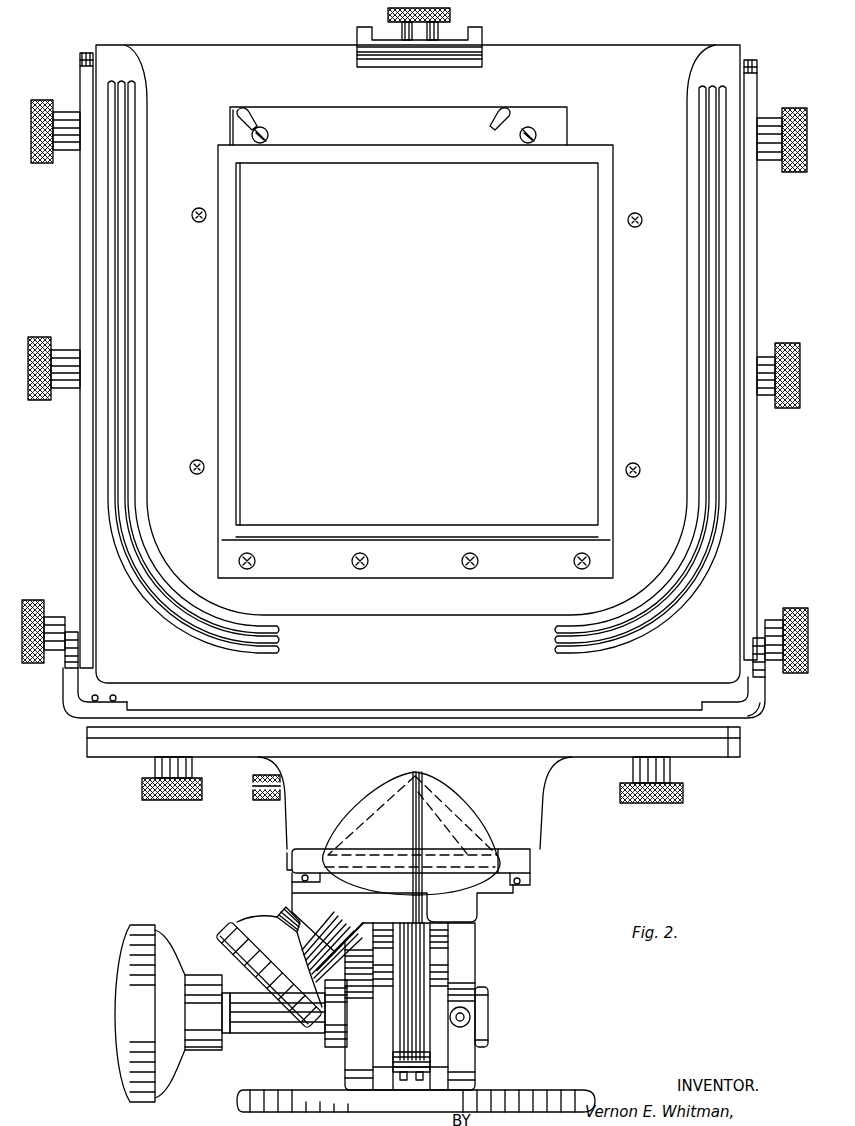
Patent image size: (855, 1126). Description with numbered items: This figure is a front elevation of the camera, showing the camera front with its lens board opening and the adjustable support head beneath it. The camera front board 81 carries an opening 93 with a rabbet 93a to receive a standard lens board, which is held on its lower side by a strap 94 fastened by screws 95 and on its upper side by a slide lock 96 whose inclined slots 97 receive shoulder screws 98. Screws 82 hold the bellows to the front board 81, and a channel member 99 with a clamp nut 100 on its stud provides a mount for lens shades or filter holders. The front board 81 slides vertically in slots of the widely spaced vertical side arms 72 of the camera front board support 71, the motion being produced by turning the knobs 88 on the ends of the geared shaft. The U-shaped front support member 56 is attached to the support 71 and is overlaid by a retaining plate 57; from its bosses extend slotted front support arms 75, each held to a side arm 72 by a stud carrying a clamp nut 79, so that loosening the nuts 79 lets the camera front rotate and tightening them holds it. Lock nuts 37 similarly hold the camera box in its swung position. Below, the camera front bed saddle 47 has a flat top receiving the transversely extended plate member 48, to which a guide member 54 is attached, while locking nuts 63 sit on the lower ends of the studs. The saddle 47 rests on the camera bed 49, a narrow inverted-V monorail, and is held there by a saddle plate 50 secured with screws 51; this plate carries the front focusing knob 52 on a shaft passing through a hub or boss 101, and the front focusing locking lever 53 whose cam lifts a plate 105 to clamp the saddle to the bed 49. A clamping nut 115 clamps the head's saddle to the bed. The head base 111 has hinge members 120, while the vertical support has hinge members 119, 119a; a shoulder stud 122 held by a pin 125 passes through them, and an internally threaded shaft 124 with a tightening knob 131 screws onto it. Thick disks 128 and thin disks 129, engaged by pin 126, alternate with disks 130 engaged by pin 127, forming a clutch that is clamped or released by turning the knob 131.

The camera front board 81 is at (608, 58).
The vertical side arms 72 is at (148, 123).
The camera front board support 71 is at (417, 622).
The front support arm 75 is at (80, 243).
The clamp nut 79 is at (44, 164).
The lock nut 37 is at (44, 401).
The knob 88 is at (36, 664).
The clamp nut 100 is at (388, 15).
The channel member 99 is at (482, 36).
The opening 93 is at (600, 300).
The rabbet 93a is at (222, 378).
The slide lock 96 is at (401, 114).
The inclined slots 97 is at (255, 118).
The shoulder screws 98 is at (268, 135).
The screws 82 is at (199, 208).
The strap 94 is at (425, 548).
The screws 95 is at (250, 552).
The retaining plate 57 is at (427, 702).
The U-shaped front support member 56 is at (748, 722).
The guide member 54 is at (130, 738).
The transversely extended plate member 48 is at (730, 753).
The locking nuts 63 is at (172, 800).
The clamping nut 115 is at (266, 800).
The camera front bed saddle 47 is at (534, 812).
The camera bed 49 is at (470, 826).
The plate 105 is at (383, 860).
The saddle plate 50 is at (530, 860).
The screws 51 is at (310, 879).
The front focusing locking lever 53 is at (478, 908).
The front focusing knob 52 is at (226, 928).
The hub or boss 101 is at (280, 920).
The unthreaded pin 126 is at (382, 933).
The vertical arm or hinge member 119 is at (350, 1054).
The vertical arm or hinge member 119a is at (452, 935).
The thin disks 129 is at (412, 952).
The thick metal disks 128 is at (395, 990).
The pin 125 is at (471, 1012).
The shoulder stud or screw 122 is at (488, 1027).
The unthreaded pin 127 is at (430, 1062).
The hinge member 120 is at (350, 1075).
The disks 130 is at (413, 1081).
The head base 111 is at (243, 1098).
The tightening knob 131 is at (118, 983).
The internally threaded shaft 124 is at (268, 1026).